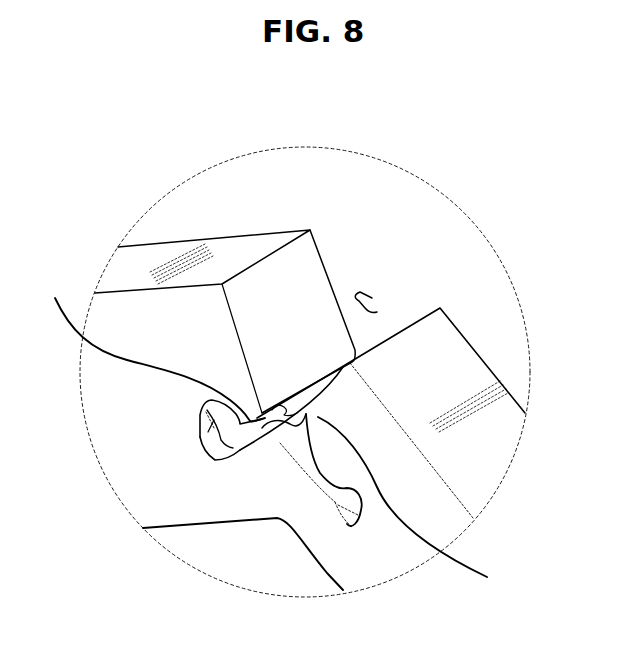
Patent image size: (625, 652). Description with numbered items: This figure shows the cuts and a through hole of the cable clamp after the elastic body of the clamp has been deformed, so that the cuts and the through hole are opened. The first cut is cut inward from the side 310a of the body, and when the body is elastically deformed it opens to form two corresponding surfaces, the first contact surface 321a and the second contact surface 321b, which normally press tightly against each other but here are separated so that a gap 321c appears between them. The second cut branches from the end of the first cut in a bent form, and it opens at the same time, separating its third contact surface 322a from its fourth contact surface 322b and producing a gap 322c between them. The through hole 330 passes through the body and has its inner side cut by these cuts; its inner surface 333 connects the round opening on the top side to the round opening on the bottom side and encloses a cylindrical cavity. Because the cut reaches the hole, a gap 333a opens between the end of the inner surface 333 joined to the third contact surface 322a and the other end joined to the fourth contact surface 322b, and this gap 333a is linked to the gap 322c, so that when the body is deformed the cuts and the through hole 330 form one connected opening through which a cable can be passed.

The side of the body 310a is at (245, 253).
The first contact surface 321a is at (313, 253).
The second contact surface 321b is at (415, 322).
The gap 321c is at (372, 298).
The third contact surface 322a is at (144, 345).
The fourth contact surface 322b is at (260, 442).
The gap 322c is at (431, 503).
The through hole 330 is at (352, 527).
The inner surface 333 is at (200, 440).
The gap 333a is at (240, 447).